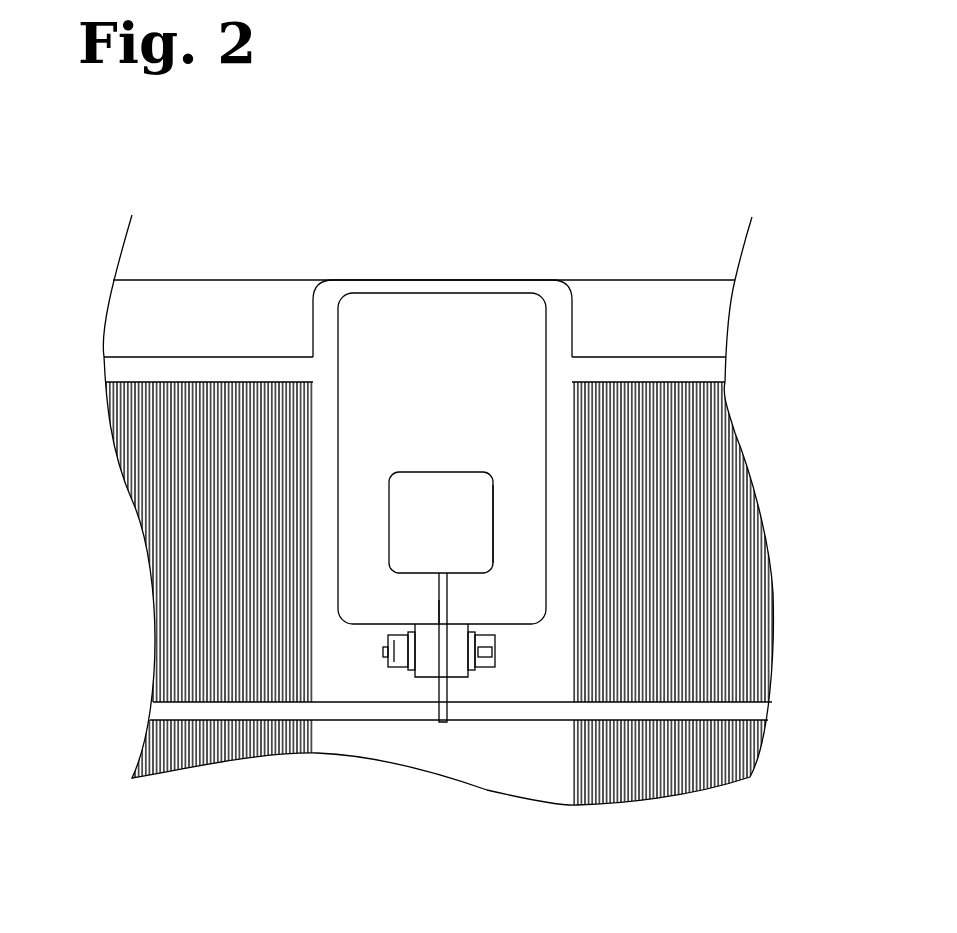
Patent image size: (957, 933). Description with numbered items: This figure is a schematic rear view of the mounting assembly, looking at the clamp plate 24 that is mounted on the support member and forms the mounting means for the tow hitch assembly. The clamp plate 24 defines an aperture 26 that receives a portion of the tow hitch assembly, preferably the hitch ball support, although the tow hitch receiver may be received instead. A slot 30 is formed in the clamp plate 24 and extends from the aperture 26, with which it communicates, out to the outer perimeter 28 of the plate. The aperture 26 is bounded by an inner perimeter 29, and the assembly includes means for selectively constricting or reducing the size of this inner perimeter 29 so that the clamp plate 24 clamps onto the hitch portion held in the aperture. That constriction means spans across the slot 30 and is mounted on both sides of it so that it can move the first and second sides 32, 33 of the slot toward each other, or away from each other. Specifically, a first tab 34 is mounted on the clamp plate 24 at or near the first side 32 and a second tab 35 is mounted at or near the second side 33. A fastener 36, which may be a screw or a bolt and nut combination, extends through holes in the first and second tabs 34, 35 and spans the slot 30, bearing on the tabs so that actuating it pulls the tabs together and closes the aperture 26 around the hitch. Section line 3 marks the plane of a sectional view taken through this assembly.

The section line 3- 3 is at (443, 268).
The clamp plate 24 is at (455, 347).
The aperture 26 is at (472, 533).
The outer perimeter 28 is at (540, 417).
The inner perimeter 29 is at (495, 487).
The slot 30 is at (447, 600).
The first side of the slot 32 is at (437, 612).
The second side of the slot 33 is at (447, 592).
The first tab 34 is at (410, 665).
The second tab 35 is at (472, 665).
The fastener 36 is at (485, 652).